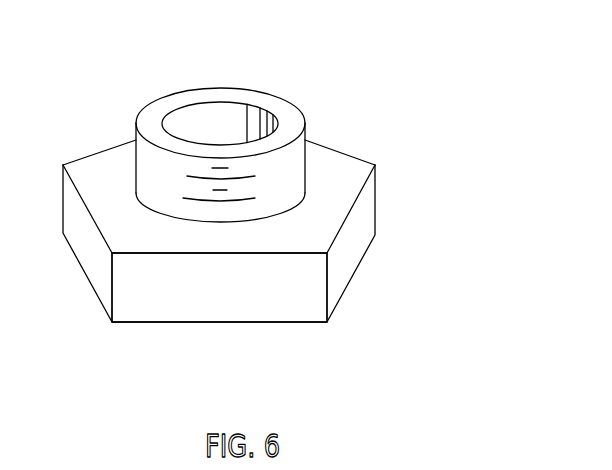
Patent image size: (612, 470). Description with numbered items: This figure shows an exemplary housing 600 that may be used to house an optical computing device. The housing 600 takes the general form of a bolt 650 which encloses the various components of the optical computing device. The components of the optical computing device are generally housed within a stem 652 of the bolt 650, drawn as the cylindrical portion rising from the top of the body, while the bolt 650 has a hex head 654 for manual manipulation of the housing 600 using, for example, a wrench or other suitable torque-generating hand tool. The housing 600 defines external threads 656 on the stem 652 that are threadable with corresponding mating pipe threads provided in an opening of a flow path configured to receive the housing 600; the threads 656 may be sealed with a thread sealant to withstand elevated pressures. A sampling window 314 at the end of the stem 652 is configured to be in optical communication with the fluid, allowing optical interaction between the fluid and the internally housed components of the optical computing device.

The housing 600 is at (253, 191).
The sampling window 314 is at (220, 118).
The bolt 650 is at (377, 235).
The stem 652 is at (262, 194).
The hex head 654 is at (215, 310).
The external threads 656 is at (220, 190).